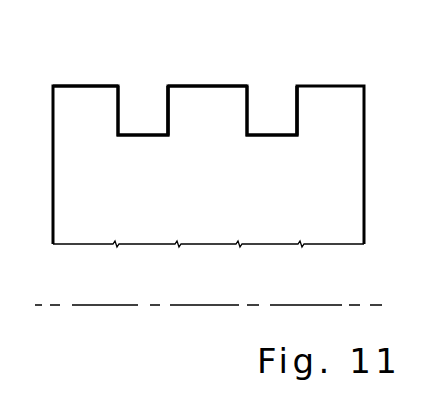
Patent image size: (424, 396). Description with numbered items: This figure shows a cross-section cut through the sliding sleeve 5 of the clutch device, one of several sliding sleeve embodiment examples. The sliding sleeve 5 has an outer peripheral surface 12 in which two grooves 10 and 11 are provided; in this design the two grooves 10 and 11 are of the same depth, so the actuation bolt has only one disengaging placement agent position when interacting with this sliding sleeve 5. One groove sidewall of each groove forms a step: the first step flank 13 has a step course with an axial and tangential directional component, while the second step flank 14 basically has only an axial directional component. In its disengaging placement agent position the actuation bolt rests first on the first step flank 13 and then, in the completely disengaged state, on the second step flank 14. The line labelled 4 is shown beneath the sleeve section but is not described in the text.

The axis / base line 4 is at (55, 305).
The sliding sleeve 5 is at (233, 75).
The groove 10 is at (266, 113).
The groove 11 is at (142, 113).
The outer peripheral surface 12 is at (88, 84).
The first step flank 13 is at (299, 110).
The second step flank 14 is at (168, 110).